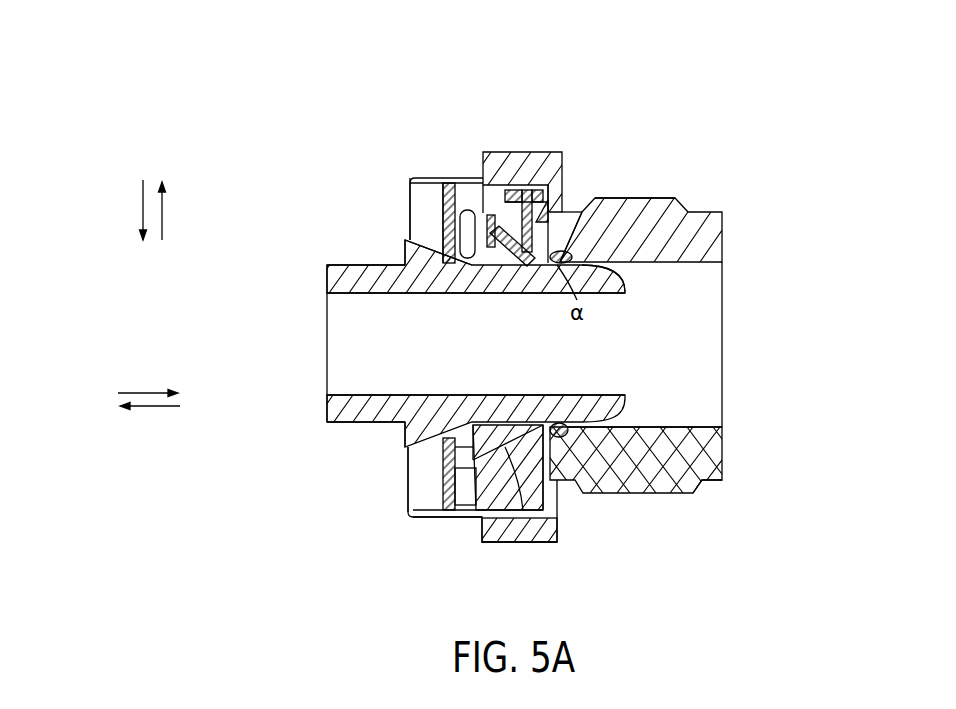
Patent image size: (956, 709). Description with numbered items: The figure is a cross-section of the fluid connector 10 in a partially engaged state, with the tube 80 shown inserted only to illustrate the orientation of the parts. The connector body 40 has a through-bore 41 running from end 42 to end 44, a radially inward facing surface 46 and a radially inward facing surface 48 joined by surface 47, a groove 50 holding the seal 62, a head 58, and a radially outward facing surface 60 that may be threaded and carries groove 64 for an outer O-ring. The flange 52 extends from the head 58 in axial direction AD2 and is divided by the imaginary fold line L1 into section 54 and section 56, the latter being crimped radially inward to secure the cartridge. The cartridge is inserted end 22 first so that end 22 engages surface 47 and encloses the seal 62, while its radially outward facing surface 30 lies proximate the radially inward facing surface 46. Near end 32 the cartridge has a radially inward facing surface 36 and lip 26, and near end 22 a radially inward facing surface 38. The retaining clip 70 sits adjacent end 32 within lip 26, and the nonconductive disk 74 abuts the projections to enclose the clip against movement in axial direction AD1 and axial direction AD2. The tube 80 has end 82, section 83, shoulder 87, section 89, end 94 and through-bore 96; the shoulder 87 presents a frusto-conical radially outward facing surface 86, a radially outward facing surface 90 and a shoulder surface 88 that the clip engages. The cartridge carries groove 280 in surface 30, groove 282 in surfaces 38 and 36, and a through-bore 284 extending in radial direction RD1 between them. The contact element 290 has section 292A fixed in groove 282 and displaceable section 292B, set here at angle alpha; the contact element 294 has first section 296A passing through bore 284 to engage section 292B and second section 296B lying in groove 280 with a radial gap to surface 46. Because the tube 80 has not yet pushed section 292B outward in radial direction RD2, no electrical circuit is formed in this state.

The fluid connector 10 is at (226, 80).
The end 22 is at (549, 482).
The lip 26 is at (458, 520).
The radially outward facing surface 30 is at (505, 510).
The end 32 is at (412, 508).
The radially inward facing surface 36 is at (454, 478).
The radially inward facing surface 38 is at (521, 508).
The connector body 40 is at (705, 210).
The through-bore 41 is at (640, 353).
The end 42 is at (722, 447).
The end 44 is at (410, 180).
The radially inward facing surface 46 is at (546, 184).
The surface 47 is at (558, 506).
The radially inward facing surface 48 is at (702, 480).
The groove 50 is at (630, 442).
The flange 52 is at (418, 176).
The section 54 is at (465, 540).
The section 56 is at (414, 528).
The head 58 is at (542, 542).
The radially outward facing surface 60 is at (678, 196).
The seal 62 is at (660, 240).
The groove 64 is at (568, 215).
The retaining clip 70 is at (466, 262).
The disk 74 is at (447, 230).
The tube 80 is at (338, 262).
The end 82 is at (628, 288).
The section 83 is at (575, 436).
The radially outward facing surface 86 is at (456, 262).
The shoulder 87 is at (425, 420).
The shoulder surface 88 is at (418, 248).
The section 89 is at (341, 435).
The radially outward facing surface 90 is at (328, 262).
The end 94 is at (327, 410).
The through-bore 96 is at (340, 345).
The groove 280 is at (560, 210).
The groove 282 is at (458, 178).
The through-bore 284 is at (576, 204).
The contact element 290 is at (514, 264).
The section 292A is at (488, 198).
The section 292B is at (486, 262).
The contact element 294 is at (531, 188).
The first section 296A is at (592, 232).
The second section 296B is at (540, 160).
The radial direction RD1 is at (163, 221).
The radial direction RD2 is at (141, 211).
The axial direction AD1 is at (150, 392).
The axial direction AD2 is at (150, 409).
The fold line L1 is at (437, 529).